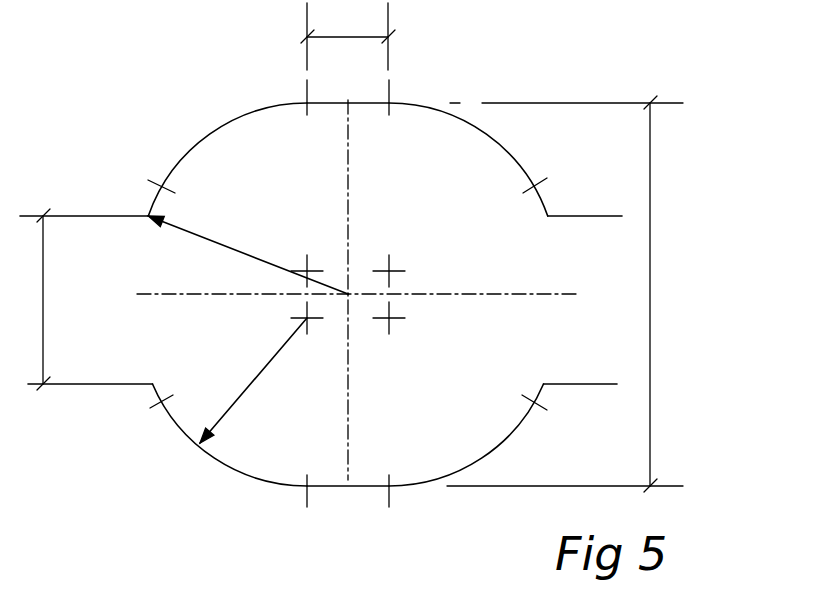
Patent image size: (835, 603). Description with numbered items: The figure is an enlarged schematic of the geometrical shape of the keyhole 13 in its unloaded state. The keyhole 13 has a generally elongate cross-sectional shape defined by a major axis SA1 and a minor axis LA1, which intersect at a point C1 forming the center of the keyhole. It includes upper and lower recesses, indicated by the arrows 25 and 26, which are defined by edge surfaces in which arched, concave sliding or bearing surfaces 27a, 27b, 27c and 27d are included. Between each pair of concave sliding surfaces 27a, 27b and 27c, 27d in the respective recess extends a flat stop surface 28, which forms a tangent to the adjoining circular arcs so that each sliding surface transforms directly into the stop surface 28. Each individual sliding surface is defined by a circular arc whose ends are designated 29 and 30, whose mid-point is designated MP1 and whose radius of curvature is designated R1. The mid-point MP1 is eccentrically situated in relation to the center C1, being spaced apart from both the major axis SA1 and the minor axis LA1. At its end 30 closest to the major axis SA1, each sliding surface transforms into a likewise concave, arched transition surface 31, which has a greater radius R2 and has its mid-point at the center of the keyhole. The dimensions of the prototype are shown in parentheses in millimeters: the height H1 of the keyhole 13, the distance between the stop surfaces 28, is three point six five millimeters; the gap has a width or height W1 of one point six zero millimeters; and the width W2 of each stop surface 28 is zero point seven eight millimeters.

The keyhole 13 is at (321, 302).
The upper portion of profile 25 is at (346, 130).
The lower portion of profile 26 is at (353, 477).
The concave sliding surface 27a is at (224, 126).
The concave sliding surface 27b is at (472, 128).
The concave sliding surface 27c is at (479, 463).
The concave sliding surface 27d is at (243, 468).
The stop surface 28 is at (363, 106).
The end of circular arc 29 is at (307, 97).
The end of circular arc 30 is at (161, 186).
The transition surface 31 is at (152, 220).
The center of the keyhole C1 is at (350, 293).
The major axis SA1 is at (470, 294).
The minor axis LA1 is at (349, 385).
The mid-point of circular arc MP1 is at (307, 320).
The radius of curvature R1 is at (266, 385).
The radius of transition surface R2 is at (248, 236).
The width of gap W1 is at (70, 299).
The width of stop surface W2 is at (348, 36).
The height of keyhole H1 is at (591, 294).